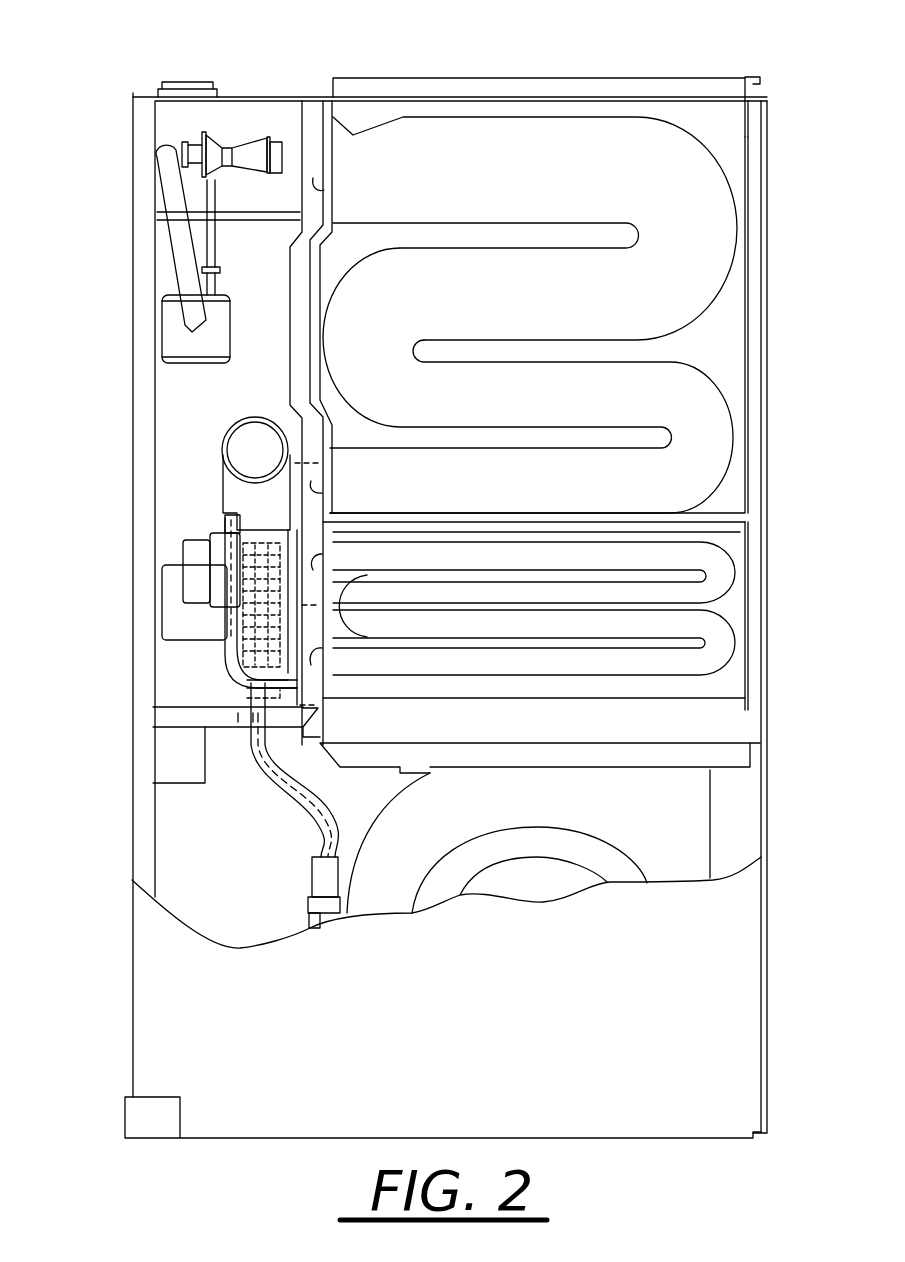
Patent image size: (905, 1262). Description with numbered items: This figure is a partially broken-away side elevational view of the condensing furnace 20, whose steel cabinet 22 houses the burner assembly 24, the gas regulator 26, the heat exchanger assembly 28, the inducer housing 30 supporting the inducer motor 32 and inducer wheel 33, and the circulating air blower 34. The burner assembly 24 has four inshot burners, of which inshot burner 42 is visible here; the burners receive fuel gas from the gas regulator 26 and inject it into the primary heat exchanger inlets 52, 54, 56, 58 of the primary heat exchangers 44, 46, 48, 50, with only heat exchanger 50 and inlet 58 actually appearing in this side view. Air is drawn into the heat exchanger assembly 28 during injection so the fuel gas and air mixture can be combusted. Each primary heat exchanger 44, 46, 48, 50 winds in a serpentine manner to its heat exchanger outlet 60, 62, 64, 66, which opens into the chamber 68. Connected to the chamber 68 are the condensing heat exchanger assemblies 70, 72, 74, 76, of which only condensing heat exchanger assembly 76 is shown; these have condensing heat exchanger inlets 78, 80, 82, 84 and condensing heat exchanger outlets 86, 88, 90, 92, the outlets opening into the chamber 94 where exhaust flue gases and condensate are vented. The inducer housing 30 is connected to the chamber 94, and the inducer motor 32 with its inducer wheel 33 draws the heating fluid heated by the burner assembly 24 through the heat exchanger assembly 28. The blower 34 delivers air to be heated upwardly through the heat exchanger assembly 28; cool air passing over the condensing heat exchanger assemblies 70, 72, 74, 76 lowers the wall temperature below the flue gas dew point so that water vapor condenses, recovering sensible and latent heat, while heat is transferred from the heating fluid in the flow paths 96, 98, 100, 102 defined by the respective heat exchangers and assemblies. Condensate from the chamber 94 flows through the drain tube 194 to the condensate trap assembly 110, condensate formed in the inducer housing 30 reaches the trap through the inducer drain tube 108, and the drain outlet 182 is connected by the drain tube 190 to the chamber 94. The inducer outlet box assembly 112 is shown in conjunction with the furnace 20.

The condensing furnace 20 is at (262, 52).
The steel cabinet 22 is at (411, 76).
The burner assembly 24 is at (226, 108).
The gas regulator 26 is at (162, 340).
The heat exchanger assembly 28 is at (785, 193).
The inducer housing 30 is at (247, 683).
The inducer motor 32 is at (162, 625).
The inducer wheel 33 is at (258, 638).
The circulating air blower 34 is at (497, 843).
The inshot burner 42 is at (255, 137).
The primary heat exchanger 44 is at (535, 228).
The primary heat exchanger 46 is at (535, 228).
The primary heat exchanger 48 is at (535, 228).
The primary heat exchanger 50 is at (535, 228).
The primary heat exchanger inlet 52 is at (417, 161).
The primary heat exchanger inlet 54 is at (417, 161).
The primary heat exchanger inlet 56 is at (417, 161).
The primary heat exchanger inlet 58 is at (313, 178).
The heat exchanger outlet 60 is at (409, 471).
The heat exchanger outlet 62 is at (409, 471).
The heat exchanger outlet 64 is at (409, 471).
The heat exchanger outlet 66 is at (311, 481).
The chamber 68 is at (290, 490).
The condensing heat exchanger assembly 70 is at (540, 647).
The condensing heat exchanger assembly 72 is at (540, 647).
The condensing heat exchanger assembly 74 is at (540, 647).
The condensing heat exchanger assembly 76 is at (540, 647).
The condensing heat exchanger inlet 78 is at (413, 577).
The condensing heat exchanger inlet 80 is at (413, 577).
The condensing heat exchanger inlet 82 is at (413, 577).
The condensing heat exchanger inlet 84 is at (313, 570).
The condensing heat exchanger outlet 86 is at (411, 689).
The condensing heat exchanger outlet 88 is at (411, 689).
The condensing heat exchanger outlet 90 is at (411, 689).
The condensing heat exchanger outlet 92 is at (311, 665).
The chamber 94 is at (293, 653).
The flow path 96 is at (528, 380).
The flow path 98 is at (528, 380).
The flow path 100 is at (528, 380).
The flow path 102 is at (528, 380).
The inducer drain tube 108 is at (267, 787).
The condensate trap assembly 110 is at (312, 875).
The inducer outlet box assembly 112 is at (200, 487).
The drain outlet 182 is at (228, 518).
The drain tube 190 is at (228, 634).
The drain tube 194 is at (270, 788).